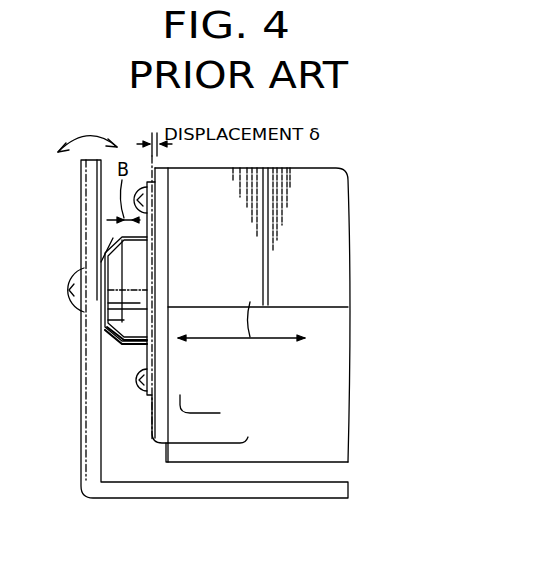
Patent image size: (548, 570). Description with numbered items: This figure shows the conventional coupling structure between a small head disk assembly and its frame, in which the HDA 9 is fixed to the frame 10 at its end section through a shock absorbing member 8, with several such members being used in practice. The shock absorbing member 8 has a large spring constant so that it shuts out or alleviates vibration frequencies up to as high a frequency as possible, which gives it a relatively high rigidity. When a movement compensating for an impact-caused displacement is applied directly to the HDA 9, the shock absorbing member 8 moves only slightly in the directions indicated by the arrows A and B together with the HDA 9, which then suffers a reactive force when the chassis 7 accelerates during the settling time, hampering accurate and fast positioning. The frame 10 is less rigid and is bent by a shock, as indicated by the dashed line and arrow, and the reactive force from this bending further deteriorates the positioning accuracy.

The chassis 7 is at (342, 452).
The shock absorbing member 8 is at (118, 338).
The HDA 9 is at (327, 180).
The frame 10 is at (337, 490).